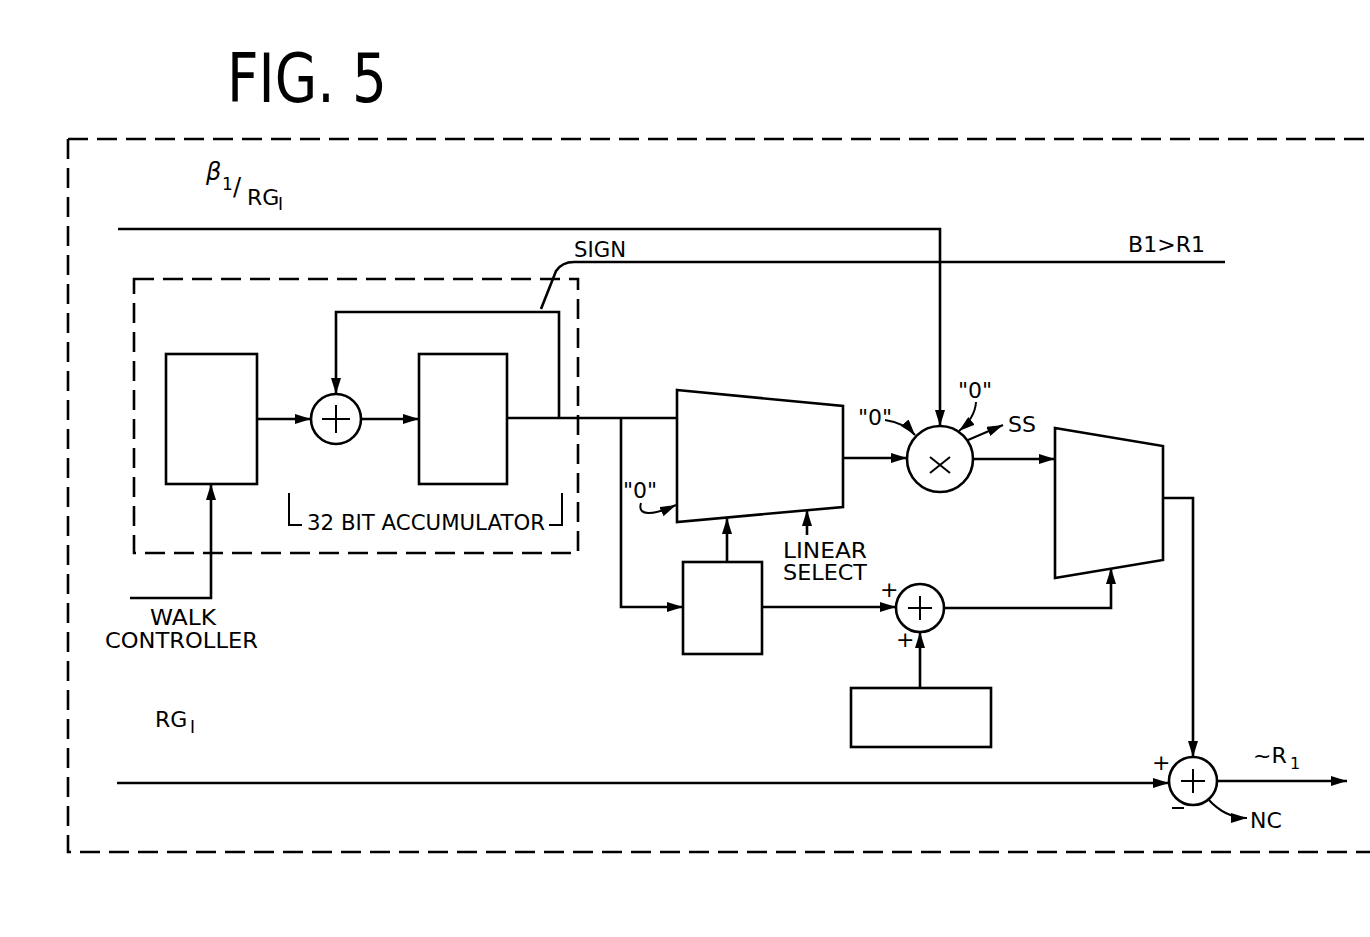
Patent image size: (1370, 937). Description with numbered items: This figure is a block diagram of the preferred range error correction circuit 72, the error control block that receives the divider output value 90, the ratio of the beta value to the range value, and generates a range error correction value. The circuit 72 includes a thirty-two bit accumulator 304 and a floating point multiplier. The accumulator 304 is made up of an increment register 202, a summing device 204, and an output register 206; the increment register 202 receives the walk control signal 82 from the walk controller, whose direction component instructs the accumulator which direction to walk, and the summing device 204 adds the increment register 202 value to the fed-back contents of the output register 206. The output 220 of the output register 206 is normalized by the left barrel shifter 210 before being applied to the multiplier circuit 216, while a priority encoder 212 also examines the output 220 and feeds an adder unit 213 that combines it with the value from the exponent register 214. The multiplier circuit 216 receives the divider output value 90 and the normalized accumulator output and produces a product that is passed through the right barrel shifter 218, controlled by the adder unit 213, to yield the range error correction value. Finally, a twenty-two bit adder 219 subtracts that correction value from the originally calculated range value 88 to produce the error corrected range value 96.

The range error correction circuit 72 is at (1314, 890).
The divider output value 90 is at (529, 308).
The R_I-β_I accumulator 304 is at (356, 430).
The walk control signal 82 is at (170, 541).
The increment register 202 is at (216, 437).
The summing device 204 is at (336, 431).
The output register 206 is at (457, 433).
The output of the output register 220 is at (592, 431).
The left barrel shifter 210 is at (760, 456).
The priority encoder 212 is at (722, 620).
The adder unit 213 is at (923, 592).
The exponent register 214 is at (899, 717).
The multiplier circuit 216 is at (942, 475).
The right barrel shifter 218 is at (1109, 503).
The 22 bit adder 219 is at (1174, 788).
The range value RG_I 88 is at (643, 766).
The error corrected range value 96 is at (1287, 807).